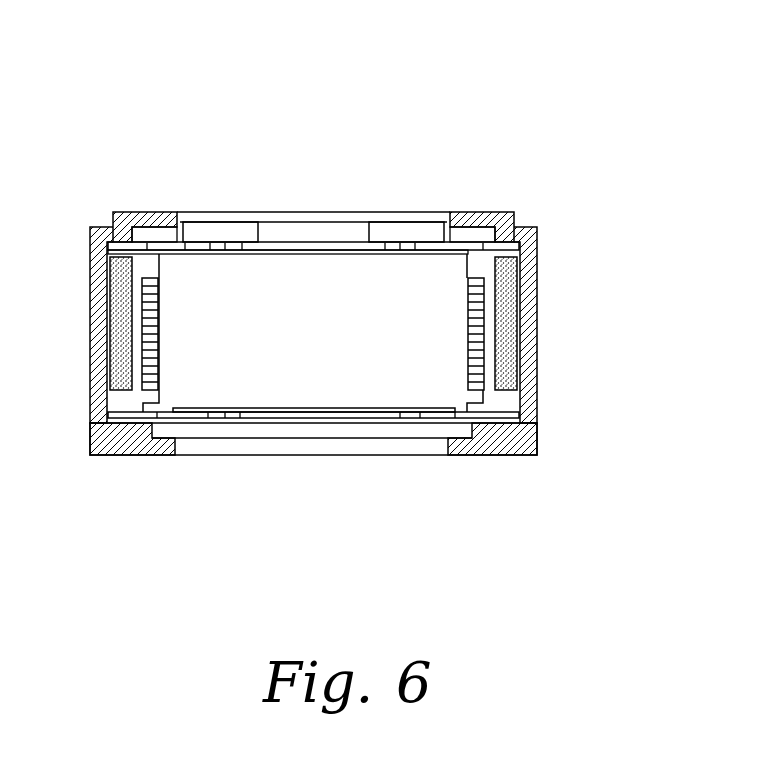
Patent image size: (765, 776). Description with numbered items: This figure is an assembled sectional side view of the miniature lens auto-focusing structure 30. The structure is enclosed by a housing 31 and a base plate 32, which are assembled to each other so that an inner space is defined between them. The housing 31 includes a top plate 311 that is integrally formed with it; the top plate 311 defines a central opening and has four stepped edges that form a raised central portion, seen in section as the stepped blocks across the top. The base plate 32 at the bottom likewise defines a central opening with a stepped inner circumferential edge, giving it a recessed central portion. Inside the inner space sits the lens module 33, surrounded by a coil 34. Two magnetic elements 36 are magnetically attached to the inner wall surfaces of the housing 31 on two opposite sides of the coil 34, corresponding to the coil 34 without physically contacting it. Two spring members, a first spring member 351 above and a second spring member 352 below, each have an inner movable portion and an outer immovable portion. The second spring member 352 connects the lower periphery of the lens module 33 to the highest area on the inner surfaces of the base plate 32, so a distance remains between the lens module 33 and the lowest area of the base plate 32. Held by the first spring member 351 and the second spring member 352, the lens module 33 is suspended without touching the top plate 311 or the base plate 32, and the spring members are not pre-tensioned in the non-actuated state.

The miniature lens auto-focusing structure 30 is at (180, 160).
The housing 31 is at (538, 262).
The top plate 311 is at (480, 212).
The base plate 32 is at (113, 440).
The lens module 33 is at (402, 232).
The coil 34 is at (153, 288).
The first spring member 351 is at (278, 242).
The second spring member 352 is at (292, 417).
The magnetic element 36 is at (105, 327).